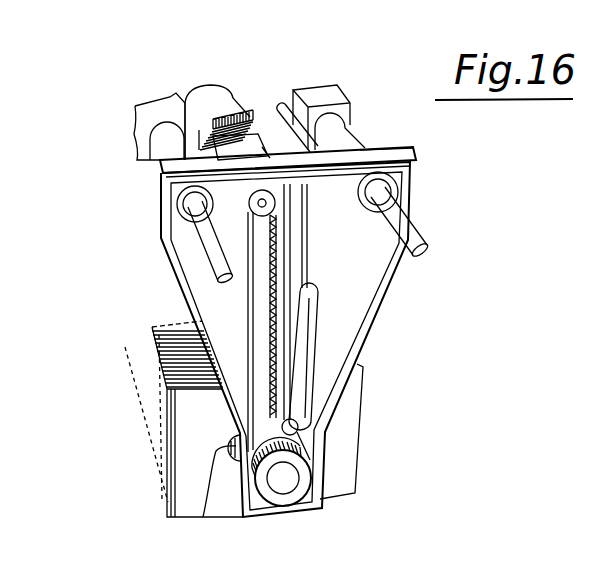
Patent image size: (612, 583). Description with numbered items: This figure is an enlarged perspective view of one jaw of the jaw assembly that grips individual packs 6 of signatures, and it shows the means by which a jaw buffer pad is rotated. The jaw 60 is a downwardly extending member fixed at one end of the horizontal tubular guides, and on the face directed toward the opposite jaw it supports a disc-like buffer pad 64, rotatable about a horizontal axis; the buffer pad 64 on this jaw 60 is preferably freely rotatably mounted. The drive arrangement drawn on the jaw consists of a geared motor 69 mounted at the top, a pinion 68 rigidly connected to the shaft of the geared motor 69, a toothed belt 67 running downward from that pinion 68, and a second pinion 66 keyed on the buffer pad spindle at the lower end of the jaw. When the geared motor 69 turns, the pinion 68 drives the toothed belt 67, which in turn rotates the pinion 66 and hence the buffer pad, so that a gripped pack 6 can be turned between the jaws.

The pack of signatures 6 is at (192, 466).
The first downwardly extending jaw 60 is at (338, 288).
The buffer pad 64 is at (203, 517).
The pinion 66 is at (297, 496).
The toothed belt 67 is at (258, 333).
The pinion 68 is at (262, 203).
The geared motor 69 is at (223, 103).